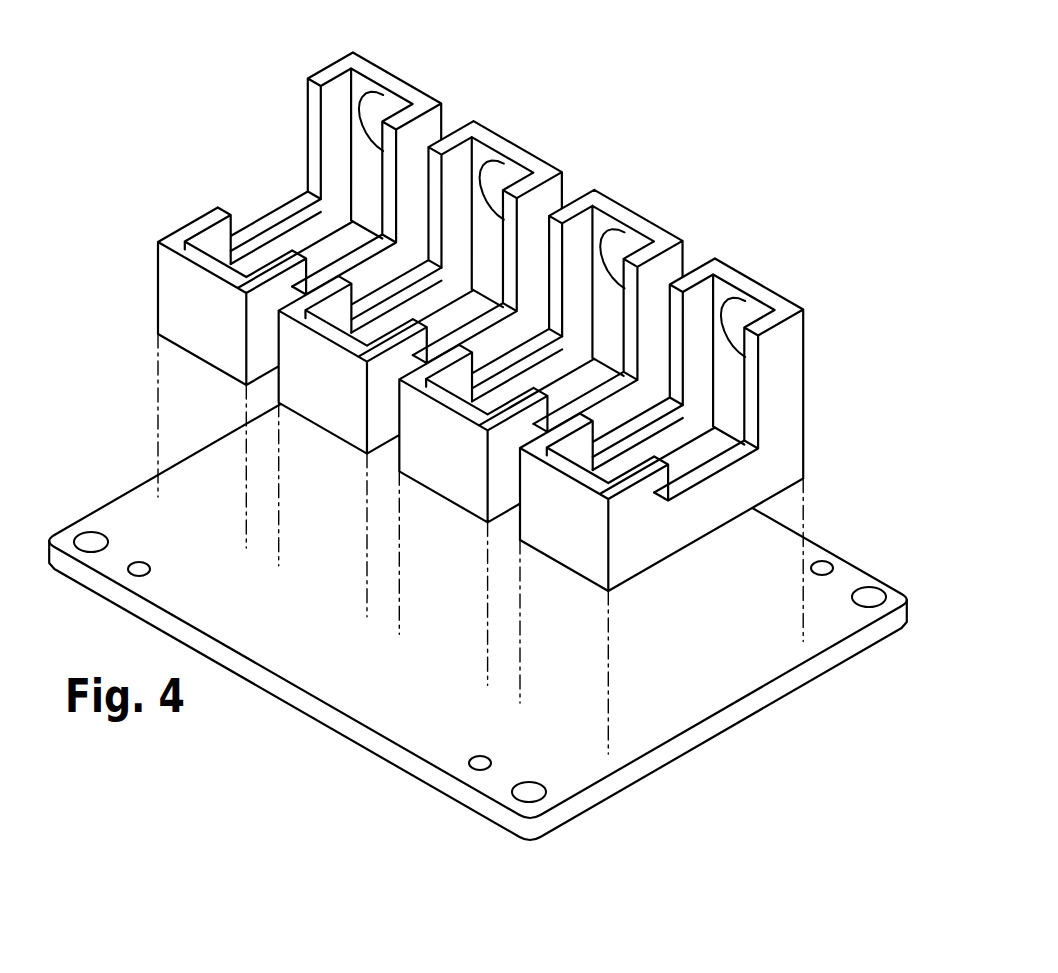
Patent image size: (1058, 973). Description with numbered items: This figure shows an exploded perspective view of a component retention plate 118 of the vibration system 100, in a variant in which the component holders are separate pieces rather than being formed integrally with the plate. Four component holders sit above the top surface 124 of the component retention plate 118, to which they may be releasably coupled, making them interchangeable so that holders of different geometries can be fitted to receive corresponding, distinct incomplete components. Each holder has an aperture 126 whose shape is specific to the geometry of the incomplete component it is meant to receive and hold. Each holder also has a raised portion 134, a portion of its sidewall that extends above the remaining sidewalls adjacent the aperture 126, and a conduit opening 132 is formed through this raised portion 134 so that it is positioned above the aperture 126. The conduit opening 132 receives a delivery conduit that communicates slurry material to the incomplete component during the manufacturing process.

The vibration system 100 is at (501, 436).
The component retention plate 118 is at (501, 581).
The top surface 124 is at (380, 676).
The aperture 126 is at (275, 222).
The conduit opening 132 is at (382, 110).
The raised portion 134 is at (529, 312).